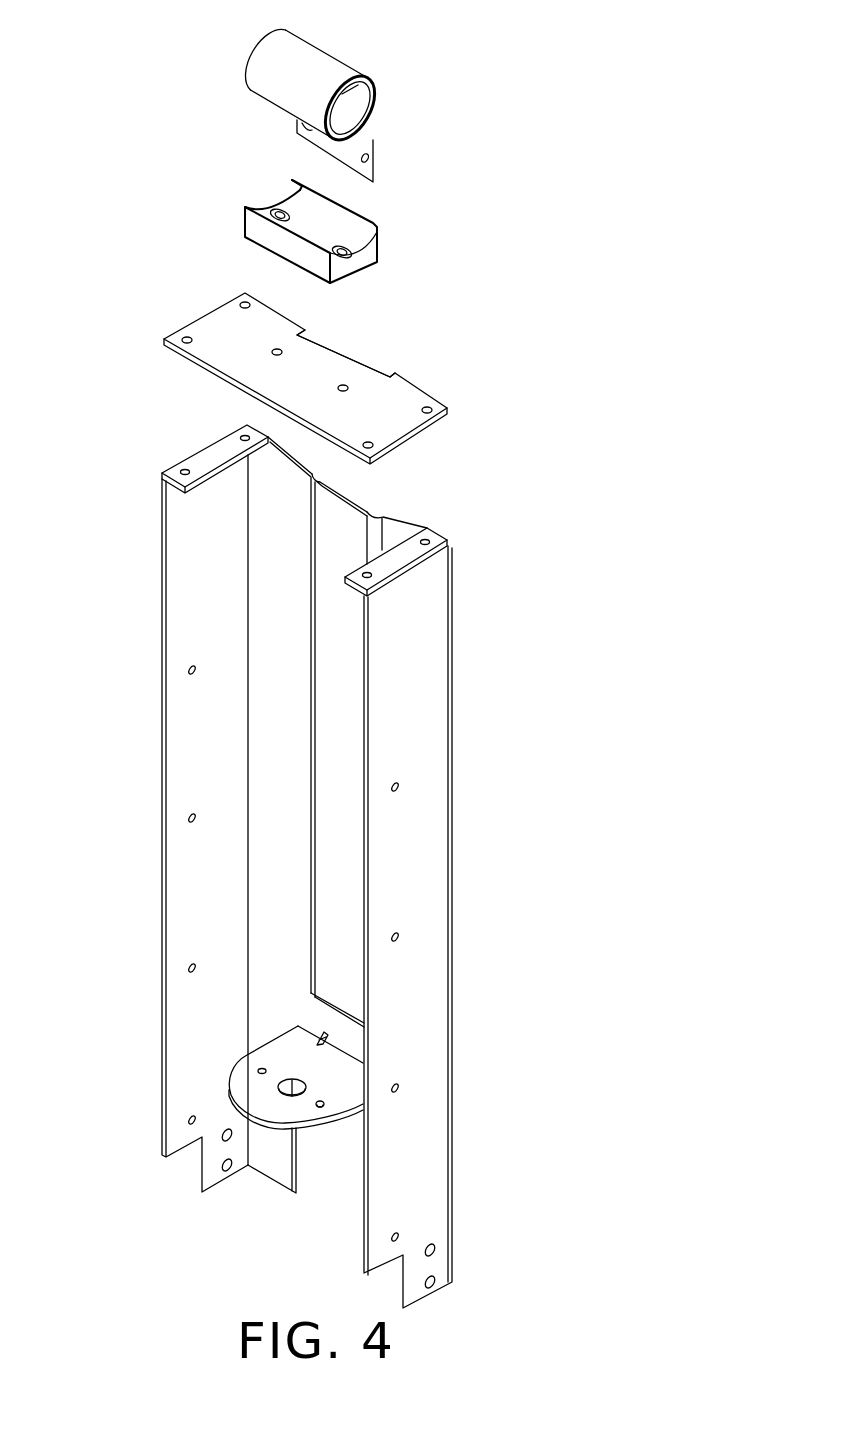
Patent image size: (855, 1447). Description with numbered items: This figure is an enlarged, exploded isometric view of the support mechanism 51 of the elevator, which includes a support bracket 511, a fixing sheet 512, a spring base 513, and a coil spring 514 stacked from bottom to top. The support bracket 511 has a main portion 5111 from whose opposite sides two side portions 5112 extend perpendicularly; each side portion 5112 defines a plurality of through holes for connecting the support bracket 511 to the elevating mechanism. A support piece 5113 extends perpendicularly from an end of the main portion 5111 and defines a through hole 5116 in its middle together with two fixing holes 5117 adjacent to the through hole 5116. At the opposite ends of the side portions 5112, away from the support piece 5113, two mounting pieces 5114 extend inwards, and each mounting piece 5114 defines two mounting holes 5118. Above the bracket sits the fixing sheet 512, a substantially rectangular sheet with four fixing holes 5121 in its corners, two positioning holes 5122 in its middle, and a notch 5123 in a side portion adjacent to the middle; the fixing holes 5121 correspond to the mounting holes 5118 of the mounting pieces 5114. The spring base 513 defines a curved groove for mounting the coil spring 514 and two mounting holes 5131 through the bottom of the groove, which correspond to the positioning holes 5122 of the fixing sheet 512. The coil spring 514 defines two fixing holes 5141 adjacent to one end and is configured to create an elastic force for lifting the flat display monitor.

The support mechanism 51 is at (112, 70).
The support bracket 511 is at (478, 742).
The main portion 5111 is at (287, 568).
The side portions 5112 is at (430, 872).
The support piece 5113 is at (337, 1085).
The mounting pieces 5114 is at (216, 455).
The through hole 5116 is at (277, 1088).
The fixing holes 5117 is at (321, 1108).
The mounting holes 5118 is at (184, 469).
The fixing sheet 512 is at (423, 368).
The fixing holes 5121 is at (431, 411).
The positioning holes 5122 is at (277, 349).
The notch 5123 is at (320, 348).
The spring base 513 is at (392, 246).
The mounting holes 5131 is at (345, 247).
The coil spring 514 is at (378, 52).
The fixing holes 5141 is at (368, 156).